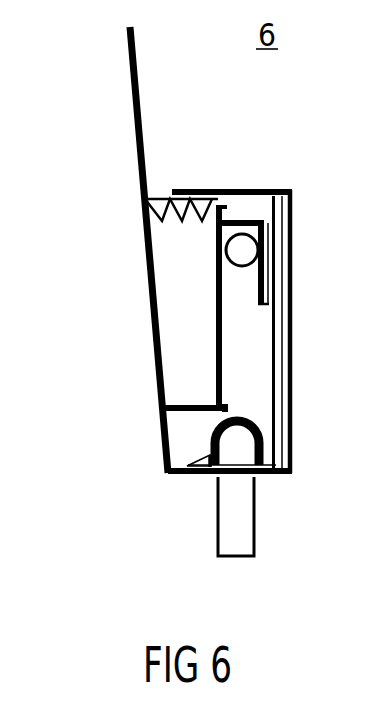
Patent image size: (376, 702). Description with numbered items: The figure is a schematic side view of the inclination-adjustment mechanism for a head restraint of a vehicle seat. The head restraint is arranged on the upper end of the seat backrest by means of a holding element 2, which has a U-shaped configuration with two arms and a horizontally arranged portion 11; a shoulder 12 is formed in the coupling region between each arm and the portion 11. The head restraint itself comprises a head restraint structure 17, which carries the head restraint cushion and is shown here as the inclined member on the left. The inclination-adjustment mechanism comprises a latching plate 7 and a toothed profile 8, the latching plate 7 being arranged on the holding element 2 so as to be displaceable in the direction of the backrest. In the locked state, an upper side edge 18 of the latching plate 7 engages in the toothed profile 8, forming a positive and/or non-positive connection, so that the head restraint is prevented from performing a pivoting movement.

The holding element 2 is at (237, 522).
The latching plate 7 is at (217, 210).
The toothed profile 8 is at (168, 199).
The horizontally arranged portion 11 is at (243, 249).
The shoulder 12 is at (243, 442).
The head restraint structure 17 is at (128, 93).
The upper side edge 18 is at (272, 190).